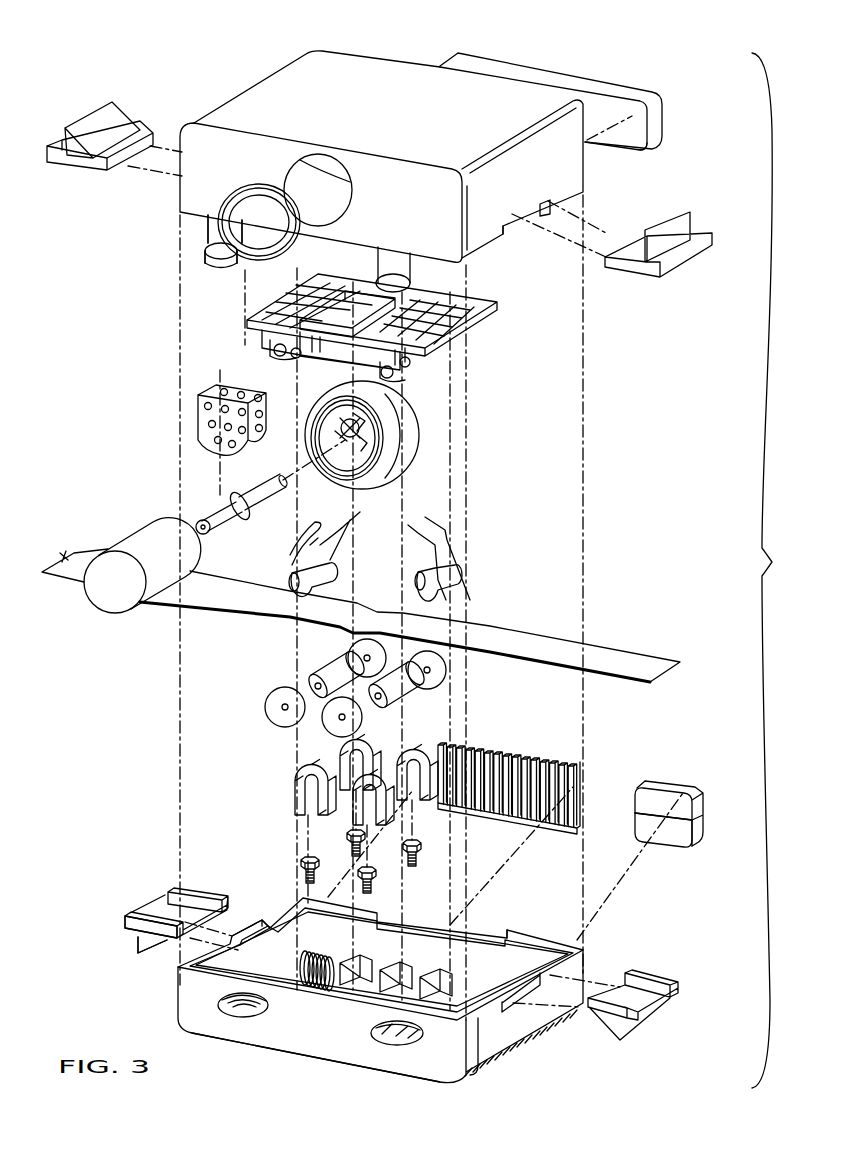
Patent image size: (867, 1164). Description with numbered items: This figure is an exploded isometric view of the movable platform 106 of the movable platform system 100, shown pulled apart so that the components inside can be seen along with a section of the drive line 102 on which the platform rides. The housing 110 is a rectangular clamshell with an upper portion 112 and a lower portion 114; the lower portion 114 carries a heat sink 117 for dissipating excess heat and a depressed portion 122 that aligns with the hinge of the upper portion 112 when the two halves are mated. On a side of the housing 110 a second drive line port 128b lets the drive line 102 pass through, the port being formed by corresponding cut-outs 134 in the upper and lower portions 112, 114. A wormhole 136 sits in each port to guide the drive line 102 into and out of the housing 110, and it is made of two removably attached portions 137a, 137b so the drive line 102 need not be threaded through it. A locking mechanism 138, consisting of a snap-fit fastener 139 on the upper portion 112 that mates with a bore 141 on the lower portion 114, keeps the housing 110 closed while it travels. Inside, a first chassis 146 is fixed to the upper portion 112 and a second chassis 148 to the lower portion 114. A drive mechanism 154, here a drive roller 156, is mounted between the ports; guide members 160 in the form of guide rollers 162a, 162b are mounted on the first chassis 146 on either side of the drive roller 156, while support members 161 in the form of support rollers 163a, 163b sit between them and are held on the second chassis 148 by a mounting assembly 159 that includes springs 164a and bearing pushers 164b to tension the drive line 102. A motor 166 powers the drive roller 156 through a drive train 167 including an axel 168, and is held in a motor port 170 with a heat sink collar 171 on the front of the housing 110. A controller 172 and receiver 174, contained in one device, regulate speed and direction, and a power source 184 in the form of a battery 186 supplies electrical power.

The movable platform system 100 is at (600, 42).
The drive line 102 is at (627, 653).
The movable platform 106 is at (394, 55).
The housing 110 is at (276, 86).
The upper portion 112 is at (428, 111).
The lower portion 114 is at (348, 1039).
The heat sink 117 is at (520, 757).
The depressed portion 122 is at (484, 927).
The second drive line port 128b is at (527, 221).
The cut-outs 134 is at (241, 933).
The wormhole 136 is at (88, 176).
The wormhole portion 137a is at (92, 125).
The wormhole portion 137b is at (672, 238).
The locking mechanism 138 is at (233, 275).
The snap-fit fastener 139 is at (213, 253).
The bore 141 is at (237, 1022).
The first chassis 146 is at (480, 317).
The second chassis 148 is at (440, 982).
The drive mechanism 154 is at (413, 423).
The drive roller 156 is at (404, 450).
The mounting assembly 159 is at (282, 767).
The guide members 160 is at (438, 548).
The support members 161 is at (263, 690).
The guide roller 162a is at (418, 584).
The guide roller 162b is at (290, 567).
The support roller 163a is at (397, 694).
The support roller 163b is at (323, 670).
The springs 164a is at (418, 864).
The bearing pushers 164b is at (420, 848).
The motor 166 is at (179, 565).
The drive train 167 is at (195, 388).
The axel 168 is at (270, 490).
The motor port 170 is at (308, 166).
The heat sink collar 171 is at (243, 188).
The controller 172 is at (698, 803).
The receiver 174 is at (698, 835).
The power source 184 is at (664, 135).
The battery 186 is at (652, 144).